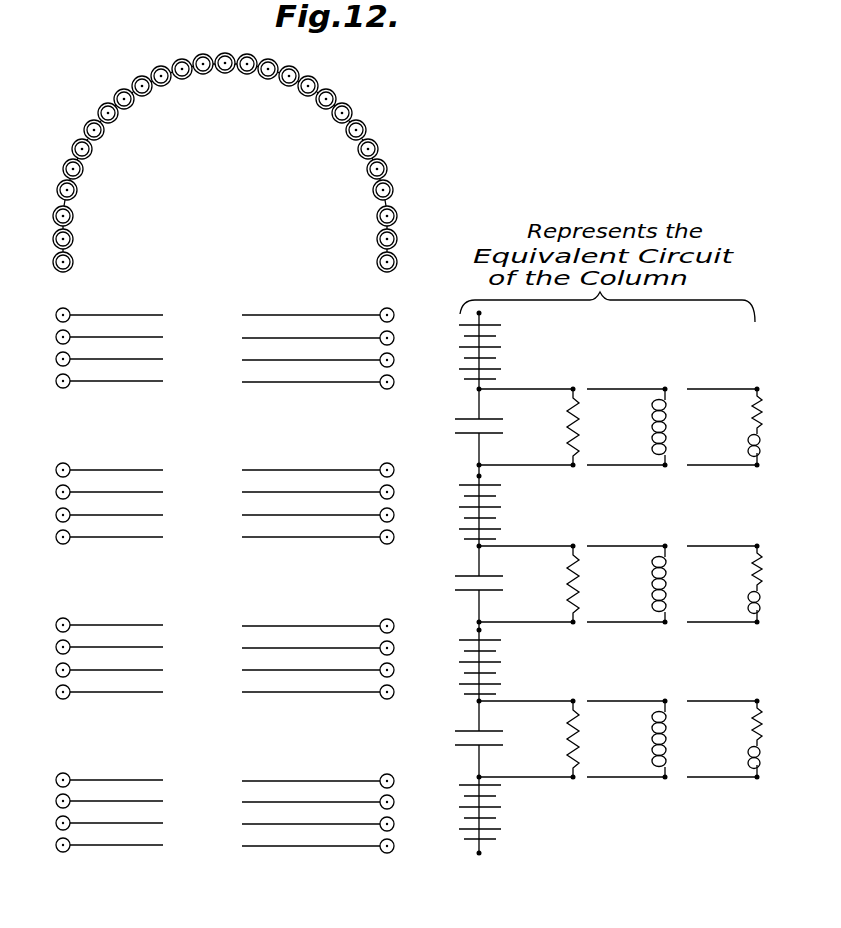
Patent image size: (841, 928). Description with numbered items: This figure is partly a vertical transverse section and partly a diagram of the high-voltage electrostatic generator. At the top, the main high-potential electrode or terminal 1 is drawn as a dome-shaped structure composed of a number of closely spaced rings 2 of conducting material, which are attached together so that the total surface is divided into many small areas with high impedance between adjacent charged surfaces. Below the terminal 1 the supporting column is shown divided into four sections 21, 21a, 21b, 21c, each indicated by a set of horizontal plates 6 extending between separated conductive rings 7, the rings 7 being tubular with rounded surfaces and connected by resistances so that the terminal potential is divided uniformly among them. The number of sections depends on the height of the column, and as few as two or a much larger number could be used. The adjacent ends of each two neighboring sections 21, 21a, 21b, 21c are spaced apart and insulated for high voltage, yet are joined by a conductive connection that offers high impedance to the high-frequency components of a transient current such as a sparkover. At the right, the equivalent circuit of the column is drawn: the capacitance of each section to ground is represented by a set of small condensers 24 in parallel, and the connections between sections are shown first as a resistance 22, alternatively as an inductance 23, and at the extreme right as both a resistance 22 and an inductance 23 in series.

The main high-potential electrode or terminal 1 is at (233, 162).
The ring 2 is at (62, 169).
The horizontal plate 6 is at (82, 360).
The ring 7 is at (56, 338).
The section 21 is at (403, 310).
The section 21a is at (403, 466).
The section 21b is at (403, 621).
The section 21c is at (403, 776).
The resistance 22 is at (560, 400).
The inductance 23 is at (655, 402).
The condenser 24 is at (507, 323).